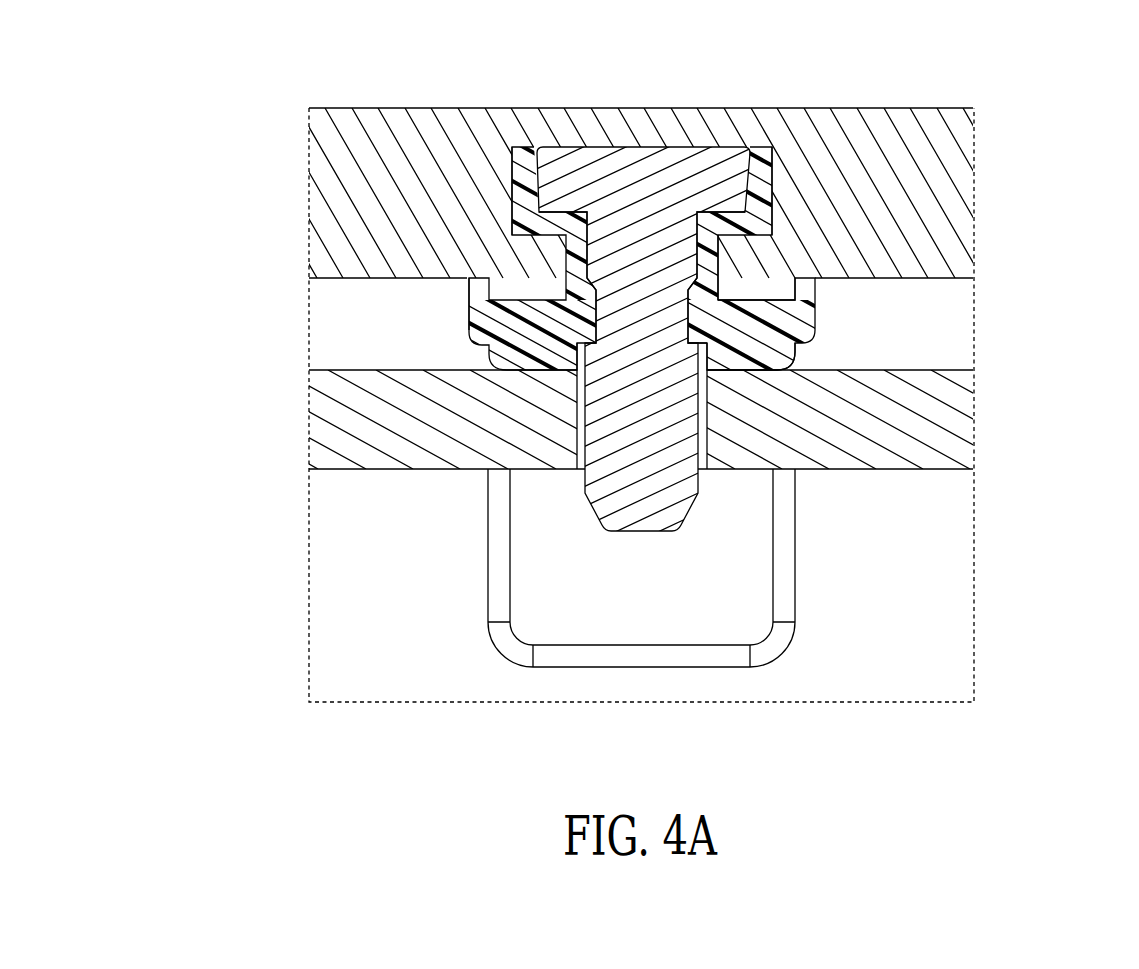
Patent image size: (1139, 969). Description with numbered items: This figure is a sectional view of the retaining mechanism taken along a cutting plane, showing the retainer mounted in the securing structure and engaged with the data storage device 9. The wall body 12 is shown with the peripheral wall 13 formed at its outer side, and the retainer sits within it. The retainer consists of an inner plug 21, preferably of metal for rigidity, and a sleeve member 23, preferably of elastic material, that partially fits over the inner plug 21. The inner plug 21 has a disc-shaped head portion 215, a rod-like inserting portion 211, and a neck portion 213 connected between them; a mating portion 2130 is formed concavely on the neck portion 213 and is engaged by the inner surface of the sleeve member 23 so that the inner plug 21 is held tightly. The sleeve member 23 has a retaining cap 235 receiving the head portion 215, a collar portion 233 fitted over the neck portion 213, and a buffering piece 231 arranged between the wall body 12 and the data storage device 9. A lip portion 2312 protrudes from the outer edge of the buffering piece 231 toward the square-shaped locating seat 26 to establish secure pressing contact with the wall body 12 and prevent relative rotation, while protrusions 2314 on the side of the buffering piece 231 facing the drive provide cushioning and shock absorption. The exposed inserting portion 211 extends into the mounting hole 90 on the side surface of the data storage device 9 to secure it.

The data storage device 9 is at (947, 572).
The wall body 12 is at (626, 159).
The peripheral wall 13 is at (640, 128).
The inner plug 21 is at (614, 234).
The inserting portion 211 is at (627, 410).
The neck portion 213 is at (545, 290).
The head portion 215 is at (528, 236).
The mating portion 2130 is at (570, 332).
The sleeve member 23 is at (812, 235).
The buffering piece 231 is at (790, 346).
The collar portion 233 is at (708, 262).
The retaining cap 235 is at (760, 185).
The lip portion 2312 is at (760, 287).
The protrusions 2314 is at (885, 406).
The locating seat 26 is at (775, 323).
The mounting hole 90 is at (704, 469).